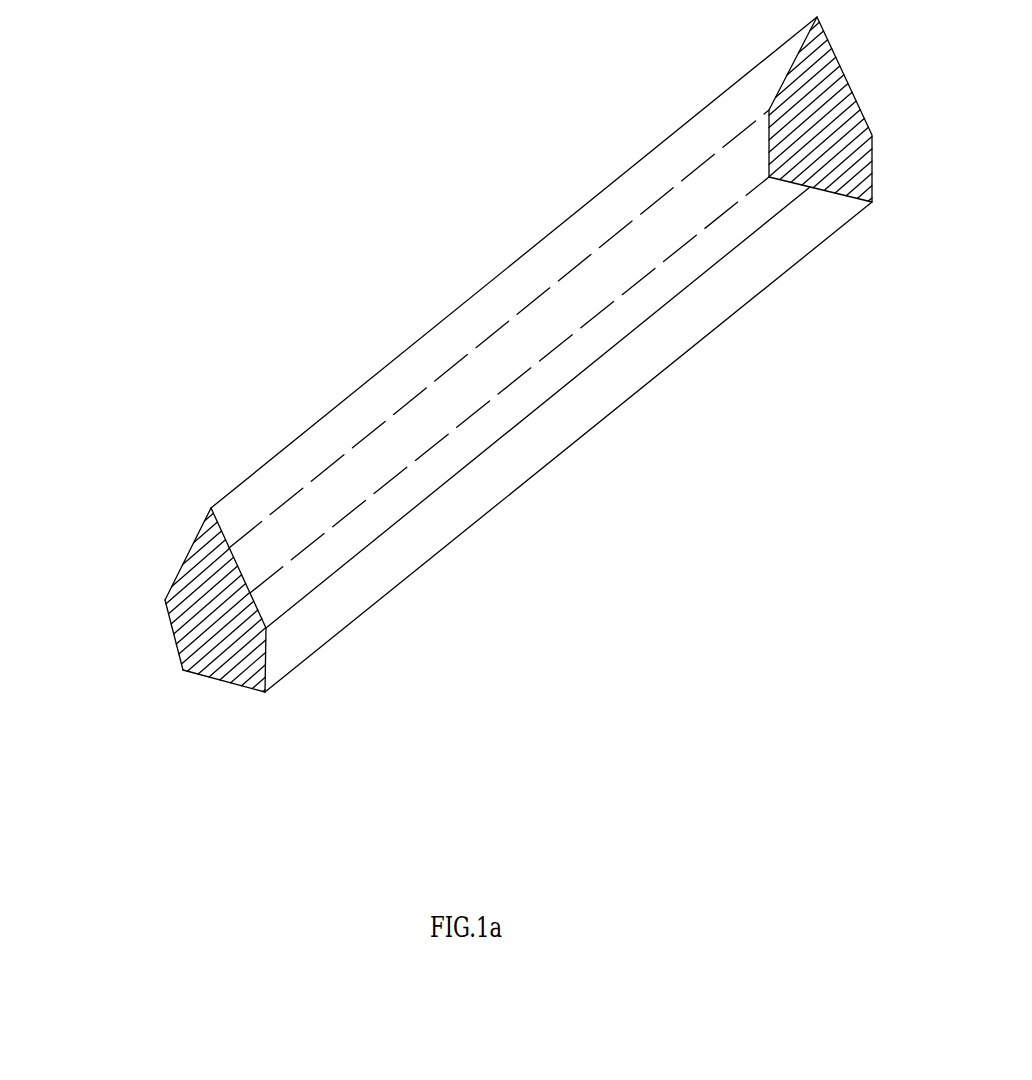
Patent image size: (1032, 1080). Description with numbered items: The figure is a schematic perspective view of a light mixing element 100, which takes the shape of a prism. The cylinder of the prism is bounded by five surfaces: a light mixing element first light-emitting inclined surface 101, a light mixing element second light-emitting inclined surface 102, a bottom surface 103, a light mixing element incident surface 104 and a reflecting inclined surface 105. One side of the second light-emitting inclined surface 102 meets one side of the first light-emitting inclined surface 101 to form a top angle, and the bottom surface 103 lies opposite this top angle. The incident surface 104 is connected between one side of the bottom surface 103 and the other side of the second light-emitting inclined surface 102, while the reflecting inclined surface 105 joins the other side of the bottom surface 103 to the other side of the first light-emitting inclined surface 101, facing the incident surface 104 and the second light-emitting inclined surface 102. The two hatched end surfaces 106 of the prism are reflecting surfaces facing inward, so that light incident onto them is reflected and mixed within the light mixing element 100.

The light mixing element 100 is at (466, 456).
The light mixing element first light-emitting inclined surface 101 is at (434, 355).
The light mixing element second light-emitting inclined surface 102 is at (514, 322).
The bottom surface 103 is at (516, 508).
The light mixing element incident surface 104 is at (537, 439).
The reflecting inclined surface 105 is at (414, 468).
The end surfaces 106 is at (519, 376).